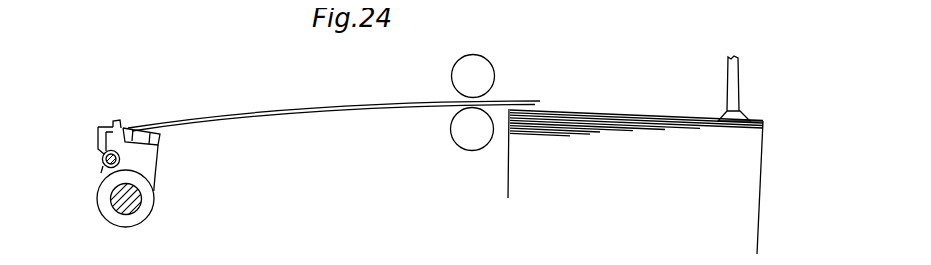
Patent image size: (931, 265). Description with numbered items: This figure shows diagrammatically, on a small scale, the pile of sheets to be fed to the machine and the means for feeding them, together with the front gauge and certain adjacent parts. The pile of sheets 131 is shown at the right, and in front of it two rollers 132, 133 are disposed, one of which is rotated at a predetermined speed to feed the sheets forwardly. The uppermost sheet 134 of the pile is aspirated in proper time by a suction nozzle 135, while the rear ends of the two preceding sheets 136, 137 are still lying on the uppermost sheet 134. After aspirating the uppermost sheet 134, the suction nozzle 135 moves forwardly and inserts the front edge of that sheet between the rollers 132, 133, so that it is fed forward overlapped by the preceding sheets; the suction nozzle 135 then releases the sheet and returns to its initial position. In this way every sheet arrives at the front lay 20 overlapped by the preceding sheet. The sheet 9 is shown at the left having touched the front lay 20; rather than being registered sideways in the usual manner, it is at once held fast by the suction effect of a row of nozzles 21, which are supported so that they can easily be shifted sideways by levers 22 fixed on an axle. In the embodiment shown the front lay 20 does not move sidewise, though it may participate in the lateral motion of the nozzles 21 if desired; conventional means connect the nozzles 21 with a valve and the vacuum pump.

The sheet 9 is at (185, 110).
The front lay 20 is at (110, 112).
The row of nozzles 21 is at (128, 119).
The levers 22 is at (140, 168).
The pile of sheets 131 is at (744, 191).
The roller 132 is at (457, 130).
The roller 133 is at (470, 68).
The uppermost sheet 134 is at (752, 113).
The suction nozzle 135 is at (732, 104).
The preceding sheet 136 is at (632, 105).
The preceding sheet 137 is at (536, 98).